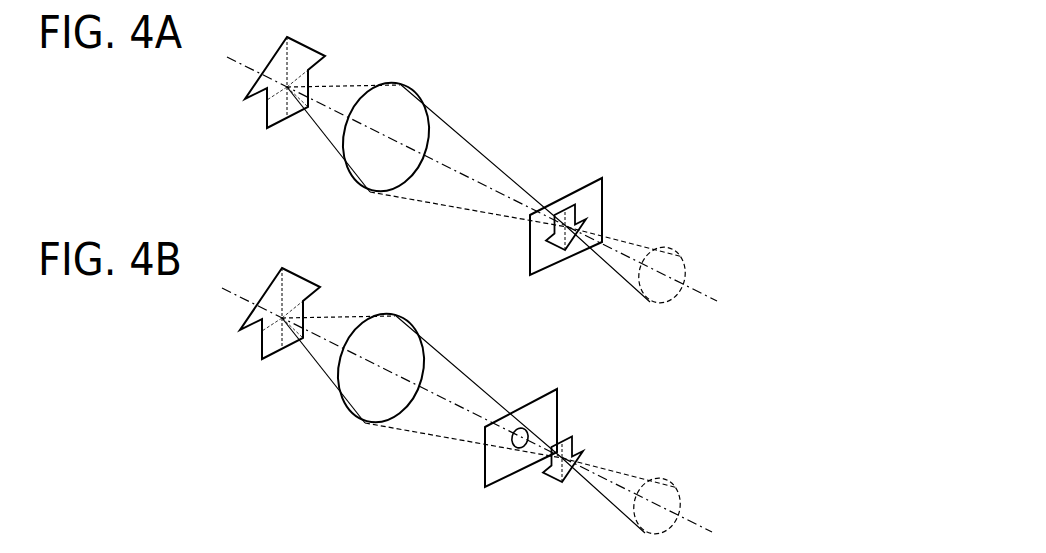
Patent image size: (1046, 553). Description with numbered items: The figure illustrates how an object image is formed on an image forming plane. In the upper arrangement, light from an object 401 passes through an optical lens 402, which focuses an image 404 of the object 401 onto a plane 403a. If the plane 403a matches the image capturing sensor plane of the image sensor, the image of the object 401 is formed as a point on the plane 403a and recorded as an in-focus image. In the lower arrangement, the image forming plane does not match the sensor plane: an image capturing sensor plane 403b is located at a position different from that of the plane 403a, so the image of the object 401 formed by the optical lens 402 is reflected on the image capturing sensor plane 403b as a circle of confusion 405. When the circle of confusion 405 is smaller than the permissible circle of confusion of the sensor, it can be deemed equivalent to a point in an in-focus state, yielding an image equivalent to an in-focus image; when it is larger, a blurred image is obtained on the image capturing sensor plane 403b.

In FIG. 4A, the object 401 is at (327, 32).
In FIG. 4B, the object 401 is at (321, 264).
In FIG. 4A, the optical lens 402 is at (412, 85).
In FIG. 4B, the optical lens 402 is at (407, 316).
In FIG. 4A, the plane 403a is at (602, 193).
In FIG. 4B, the image capturing sensor plane 403b is at (557, 401).
In FIG. 4A, the image 404 is at (565, 206).
In FIG. 4B, the image 404 is at (573, 440).
In FIG. 4B, the circle of confusion 405 is at (517, 428).